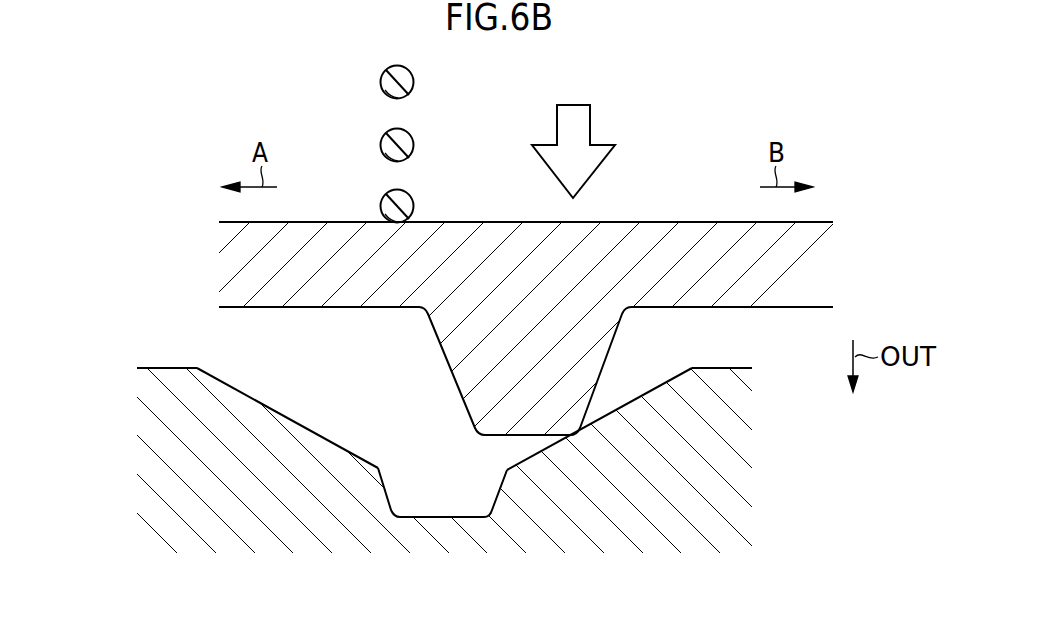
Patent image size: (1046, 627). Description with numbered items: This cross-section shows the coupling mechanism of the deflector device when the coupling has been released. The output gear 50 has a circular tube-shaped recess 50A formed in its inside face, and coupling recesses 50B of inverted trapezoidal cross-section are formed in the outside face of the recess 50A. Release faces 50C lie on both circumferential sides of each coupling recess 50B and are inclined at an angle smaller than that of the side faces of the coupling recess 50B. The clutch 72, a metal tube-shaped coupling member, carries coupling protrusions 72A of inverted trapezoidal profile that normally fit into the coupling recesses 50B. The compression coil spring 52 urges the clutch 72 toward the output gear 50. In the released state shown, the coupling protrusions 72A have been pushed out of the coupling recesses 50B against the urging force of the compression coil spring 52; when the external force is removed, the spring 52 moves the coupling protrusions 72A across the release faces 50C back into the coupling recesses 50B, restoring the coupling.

The compression coil spring 52 is at (414, 78).
The clutch 72 is at (526, 301).
The coupling protrusion 72A is at (450, 367).
The output gear 50 is at (427, 429).
The recess 50A is at (197, 335).
The coupling recess 50B is at (386, 487).
The release face 50C is at (298, 397).